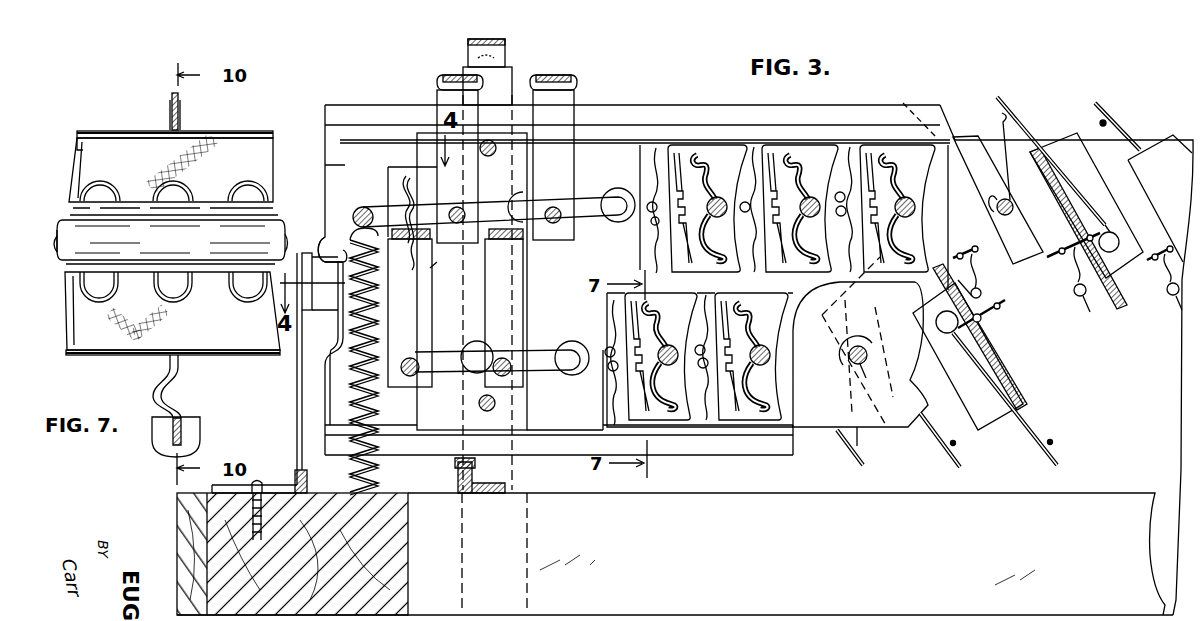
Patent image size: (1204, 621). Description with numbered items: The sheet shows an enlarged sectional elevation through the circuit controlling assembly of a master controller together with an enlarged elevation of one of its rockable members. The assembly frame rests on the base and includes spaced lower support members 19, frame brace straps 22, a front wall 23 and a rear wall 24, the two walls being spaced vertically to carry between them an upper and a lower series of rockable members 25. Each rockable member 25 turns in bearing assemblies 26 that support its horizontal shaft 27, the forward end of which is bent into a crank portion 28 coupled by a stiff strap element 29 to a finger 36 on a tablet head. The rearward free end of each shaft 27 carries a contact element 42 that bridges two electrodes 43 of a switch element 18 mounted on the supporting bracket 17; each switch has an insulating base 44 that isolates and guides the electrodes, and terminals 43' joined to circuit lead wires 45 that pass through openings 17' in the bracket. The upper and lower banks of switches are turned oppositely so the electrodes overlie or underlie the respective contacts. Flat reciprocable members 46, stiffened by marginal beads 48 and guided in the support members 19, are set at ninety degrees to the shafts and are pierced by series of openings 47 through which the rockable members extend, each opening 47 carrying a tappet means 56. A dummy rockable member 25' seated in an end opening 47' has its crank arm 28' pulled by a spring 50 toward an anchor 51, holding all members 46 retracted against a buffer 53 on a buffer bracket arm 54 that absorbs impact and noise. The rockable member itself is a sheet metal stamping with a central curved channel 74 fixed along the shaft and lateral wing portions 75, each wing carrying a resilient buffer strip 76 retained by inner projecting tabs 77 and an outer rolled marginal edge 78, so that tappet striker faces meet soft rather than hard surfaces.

In FIG. 3, the supporting bracket 17 is at (973, 178).
In FIG. 3, the openings in the switch bracket 17' is at (1070, 291).
In FIG. 3, the switch element 18 is at (1165, 149).
In FIG. 7, the lower support member 19 is at (193, 432).
In FIG. 3, the lower support member 19 is at (507, 489).
In FIG. 3, the frame brace strap 22 is at (505, 42).
In FIG. 3, the front wall 23 is at (565, 419).
In FIG. 3, the rear wall 24 is at (818, 428).
In FIG. 7, the rockable member 25 is at (55, 149).
In FIG. 3, the rockable member 25 is at (779, 316).
In FIG. 3, the dummy rockable member 25' is at (401, 174).
In FIG. 3, the bearing assembly 26 is at (621, 183).
In FIG. 7, the shaft 27 is at (57, 234).
In FIG. 3, the shaft 27 is at (876, 379).
In FIG. 3, the crank portion 28 is at (490, 303).
In FIG. 3, the crank arm 28' is at (346, 215).
In FIG. 3, the strap element 29 is at (562, 168).
In FIG. 3, the finger 36 is at (455, 74).
In FIG. 3, the contact element 42 is at (1001, 114).
In FIG. 3, the electrode 43 is at (993, 269).
In FIG. 3, the terminal 43' is at (1062, 267).
In FIG. 3, the base of switch 44 is at (1068, 226).
In FIG. 3, the circuit lead wire 45 is at (1068, 277).
In FIG. 7, the reciprocable member 46 is at (162, 103).
In FIG. 3, the reciprocable member 46 is at (758, 448).
In FIG. 7, the opening 47 is at (150, 115).
In FIG. 3, the opening 47 is at (794, 246).
In FIG. 3, the opening for dummy member 47' is at (443, 281).
In FIG. 7, the marginal bead 48 is at (155, 393).
In FIG. 3, the marginal bead 48 is at (692, 125).
In FIG. 3, the spring 50 is at (340, 380).
In FIG. 3, the anchor 51 is at (372, 520).
In FIG. 3, the buffer 53 is at (318, 256).
In FIG. 3, the buffer bracket arm 54 is at (297, 368).
In FIG. 3, the tappet means 56 is at (760, 152).
In FIG. 7, the curved channel 74 is at (112, 248).
In FIG. 7, the wing portion 75 is at (70, 184).
In FIG. 7, the buffer strip 76 is at (265, 158).
In FIG. 7, the projecting tab 77 is at (215, 184).
In FIG. 7, the rolled marginal edge 78 is at (255, 130).